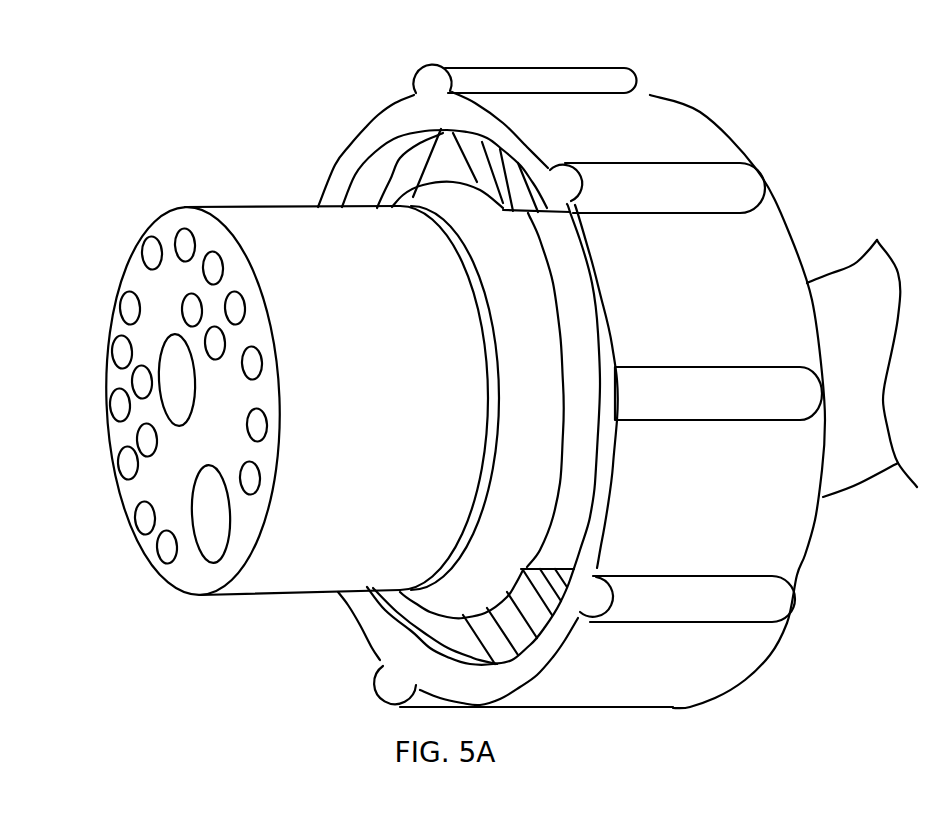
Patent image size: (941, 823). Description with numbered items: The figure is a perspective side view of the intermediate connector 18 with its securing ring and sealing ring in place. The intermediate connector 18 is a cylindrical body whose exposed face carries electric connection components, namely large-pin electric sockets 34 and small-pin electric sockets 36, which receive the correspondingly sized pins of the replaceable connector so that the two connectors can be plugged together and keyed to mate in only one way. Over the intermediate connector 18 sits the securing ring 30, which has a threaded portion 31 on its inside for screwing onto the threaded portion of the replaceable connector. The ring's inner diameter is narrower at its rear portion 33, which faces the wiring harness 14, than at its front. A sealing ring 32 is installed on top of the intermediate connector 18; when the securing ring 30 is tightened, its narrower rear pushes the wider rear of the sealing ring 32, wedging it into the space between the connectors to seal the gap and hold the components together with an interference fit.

The wiring harness 14 is at (857, 287).
The intermediate connector 18 is at (228, 208).
The securing ring 30 is at (383, 130).
The threaded portion 31 is at (460, 134).
The sealing ring 32 is at (427, 197).
The rear portion 33 is at (803, 585).
The large-pin electric socket 34 is at (200, 488).
The small-pin electric socket 36 is at (240, 473).